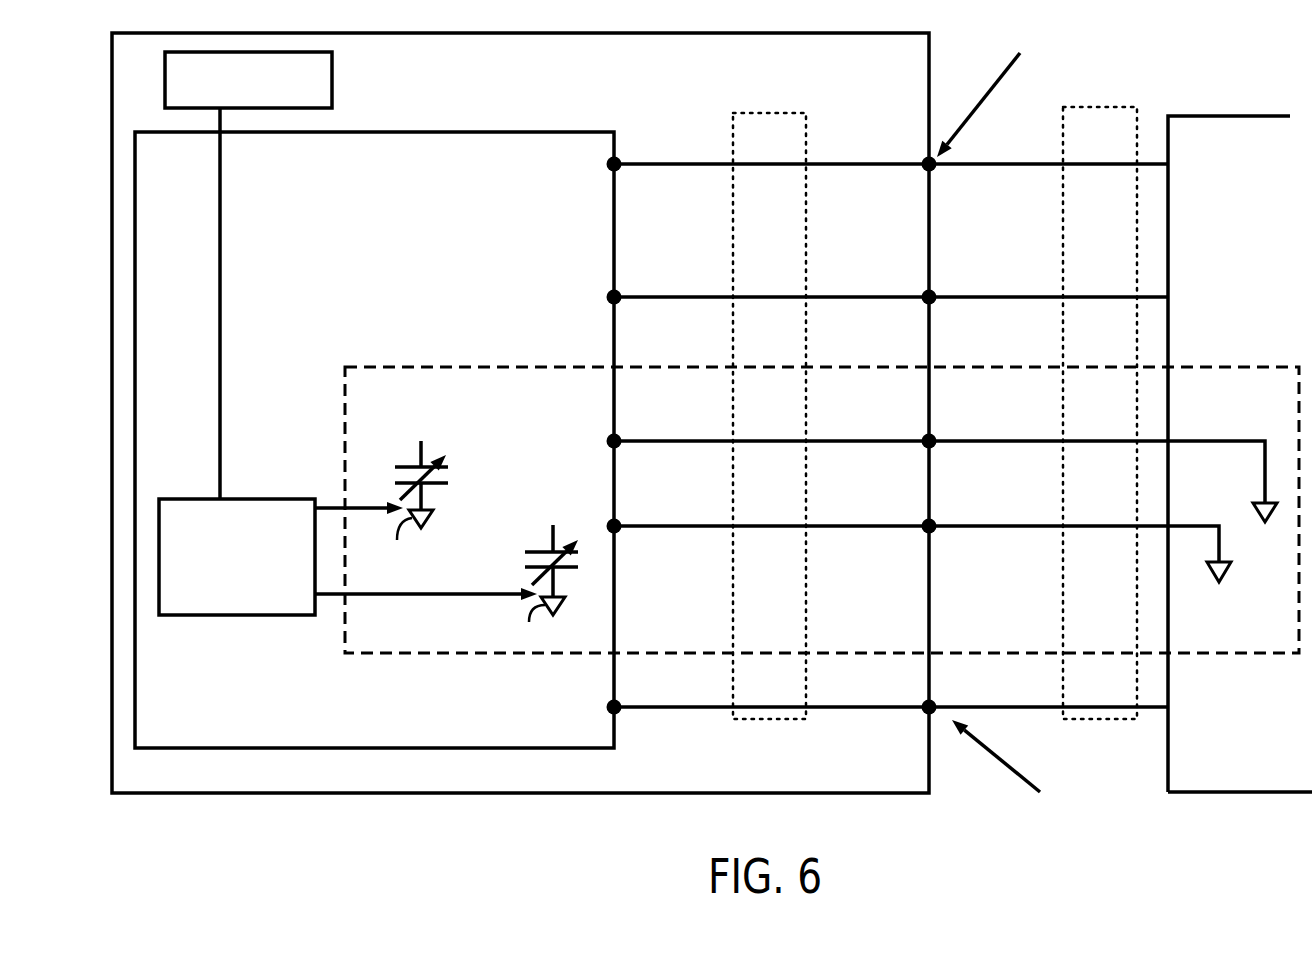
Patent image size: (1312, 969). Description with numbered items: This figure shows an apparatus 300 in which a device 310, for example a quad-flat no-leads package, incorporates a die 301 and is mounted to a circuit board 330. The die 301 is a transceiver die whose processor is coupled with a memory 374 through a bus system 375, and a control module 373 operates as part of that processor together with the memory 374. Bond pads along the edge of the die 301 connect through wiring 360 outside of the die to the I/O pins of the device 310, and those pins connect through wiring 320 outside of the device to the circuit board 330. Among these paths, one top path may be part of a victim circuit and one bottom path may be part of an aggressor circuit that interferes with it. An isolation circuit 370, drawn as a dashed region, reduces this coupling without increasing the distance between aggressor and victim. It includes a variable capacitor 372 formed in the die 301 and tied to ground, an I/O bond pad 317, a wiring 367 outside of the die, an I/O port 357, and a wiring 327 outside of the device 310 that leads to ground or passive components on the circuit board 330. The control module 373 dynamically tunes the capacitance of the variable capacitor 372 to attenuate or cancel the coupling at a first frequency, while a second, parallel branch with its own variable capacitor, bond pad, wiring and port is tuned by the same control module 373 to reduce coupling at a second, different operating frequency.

The apparatus 300 is at (152, 884).
The device 310 is at (520, 413).
The die 301 is at (374, 440).
The memory 374 is at (248, 80).
The bus system 375 is at (220, 283).
The control module 373 is at (348, 557).
The isolation circuit 370 is at (345, 383).
The variable capacitor 372 is at (395, 467).
The wiring 360 is at (777, 113).
The wiring 320 is at (1117, 107).
The circuit board 330 is at (1240, 454).
The I/O bond pad 317 is at (620, 439).
The I/O port 357 is at (935, 439).
The wiring 367 is at (771, 428).
The wiring 327 is at (1103, 465).